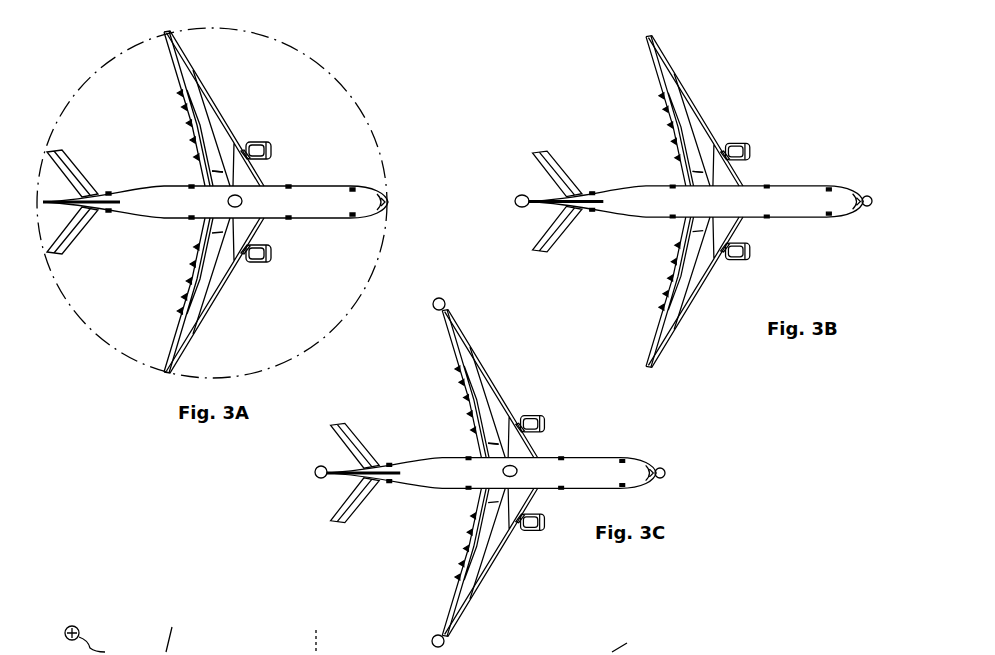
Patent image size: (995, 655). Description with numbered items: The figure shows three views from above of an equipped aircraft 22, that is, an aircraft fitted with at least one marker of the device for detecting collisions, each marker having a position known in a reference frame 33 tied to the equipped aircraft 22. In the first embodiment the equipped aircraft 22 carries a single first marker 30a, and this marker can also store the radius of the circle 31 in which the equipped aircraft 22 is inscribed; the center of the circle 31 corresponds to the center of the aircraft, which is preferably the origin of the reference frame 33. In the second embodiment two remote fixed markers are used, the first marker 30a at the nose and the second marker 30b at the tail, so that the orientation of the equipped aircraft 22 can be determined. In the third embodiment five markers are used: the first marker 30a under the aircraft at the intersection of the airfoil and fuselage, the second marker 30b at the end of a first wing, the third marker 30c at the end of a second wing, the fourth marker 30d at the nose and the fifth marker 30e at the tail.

In FIG. 3A, the equipped aircraft 22 is at (330, 183).
In FIG. 3B, the equipped aircraft 22 is at (812, 184).
In FIG. 3C, the equipped aircraft 22 is at (403, 446).
In FIG. 3A, the circle 31 is at (357, 94).
In FIG. 3A, the reference frame 33 is at (222, 200).
In FIG. 3B, the reference frame 33 is at (703, 200).
In FIG. 3C, the reference frame 33 is at (498, 472).
In FIG. 3A, the first marker 30a is at (241, 197).
In FIG. 3B, the first marker 30a is at (862, 208).
In FIG. 3C, the first marker 30a is at (517, 470).
In FIG. 3B, the second marker 30b is at (514, 206).
In FIG. 3C, the second marker 30b is at (437, 312).
In FIG. 3C, the third marker 30c is at (438, 636).
In FIG. 3C, the fourth marker 30d is at (666, 475).
In FIG. 3C, the fifth marker 30e is at (315, 476).